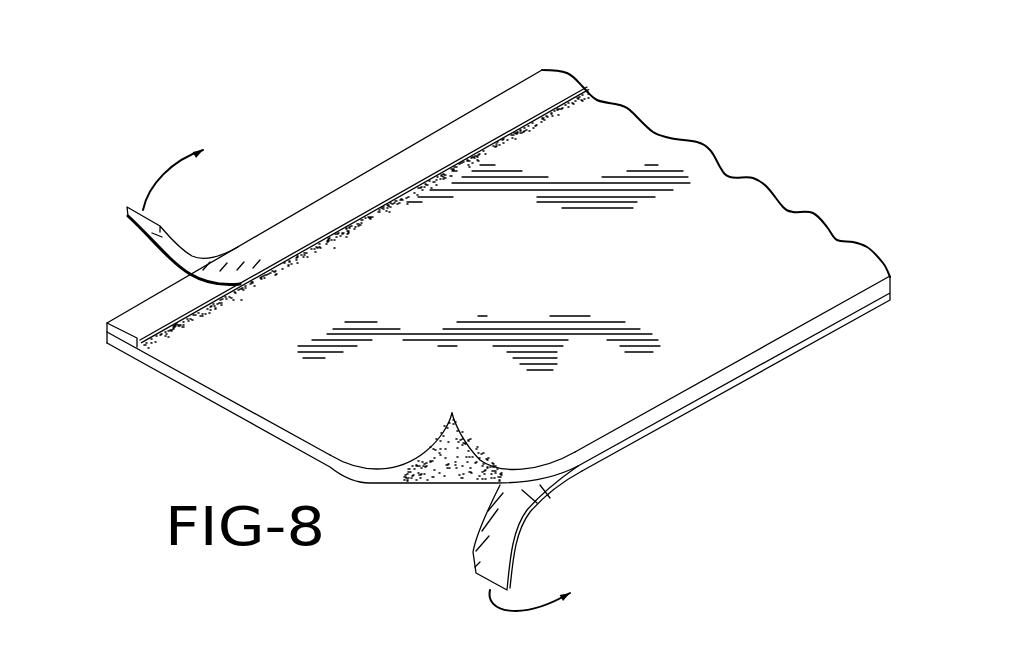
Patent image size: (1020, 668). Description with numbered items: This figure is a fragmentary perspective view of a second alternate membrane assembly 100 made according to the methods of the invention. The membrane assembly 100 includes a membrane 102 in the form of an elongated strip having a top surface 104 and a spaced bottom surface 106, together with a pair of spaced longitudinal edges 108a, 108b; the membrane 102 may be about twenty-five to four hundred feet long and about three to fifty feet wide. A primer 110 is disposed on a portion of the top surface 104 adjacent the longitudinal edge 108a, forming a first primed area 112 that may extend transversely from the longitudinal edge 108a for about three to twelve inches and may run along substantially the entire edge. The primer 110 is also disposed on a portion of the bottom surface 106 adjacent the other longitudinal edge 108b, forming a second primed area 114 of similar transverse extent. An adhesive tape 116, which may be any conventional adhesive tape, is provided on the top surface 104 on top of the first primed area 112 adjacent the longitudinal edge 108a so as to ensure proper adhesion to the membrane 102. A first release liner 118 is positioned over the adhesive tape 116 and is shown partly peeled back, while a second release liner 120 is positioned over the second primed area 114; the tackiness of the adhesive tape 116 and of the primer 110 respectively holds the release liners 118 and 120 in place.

The membrane assembly 100 is at (348, 108).
The membrane 102 is at (715, 197).
The top surface 104 is at (627, 122).
The bottom surface 106 is at (428, 478).
The longitudinal edge 108a is at (105, 334).
The longitudinal edge 108b is at (802, 330).
The primer 110 is at (197, 333).
The first primed area 112 is at (258, 284).
The second primed area 114 is at (455, 460).
The adhesive tape 116 is at (153, 302).
The first release liner 118 is at (263, 240).
The second release liner 120 is at (522, 522).